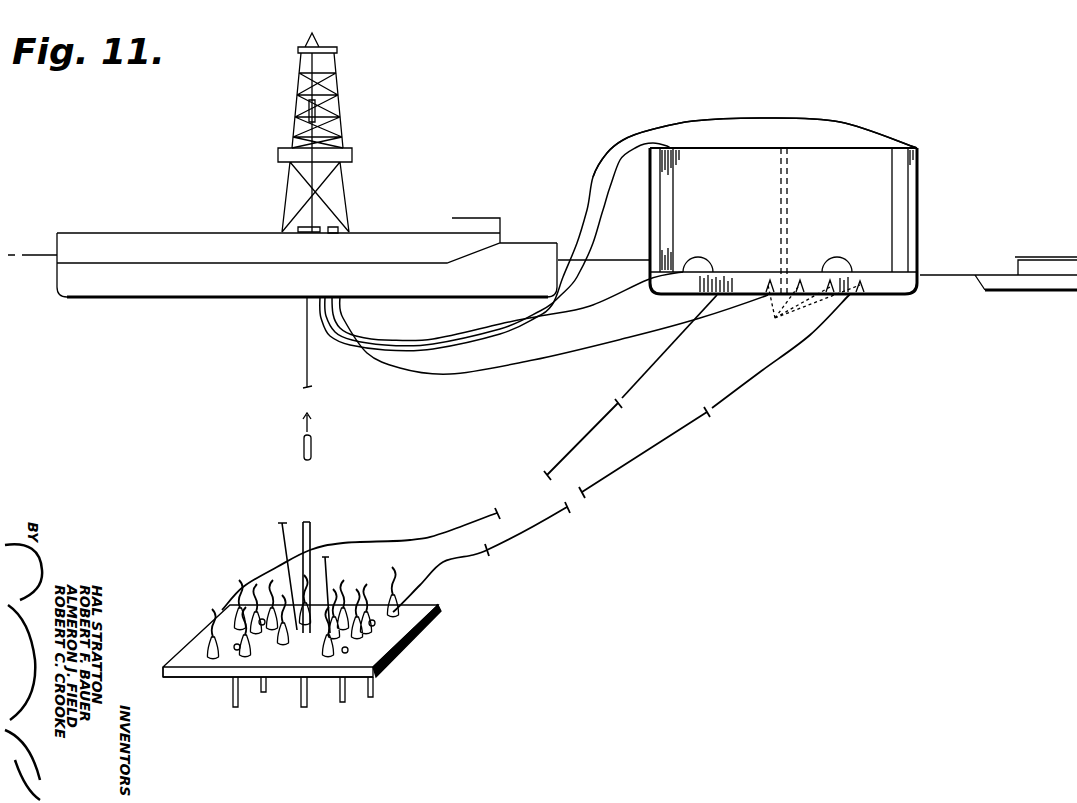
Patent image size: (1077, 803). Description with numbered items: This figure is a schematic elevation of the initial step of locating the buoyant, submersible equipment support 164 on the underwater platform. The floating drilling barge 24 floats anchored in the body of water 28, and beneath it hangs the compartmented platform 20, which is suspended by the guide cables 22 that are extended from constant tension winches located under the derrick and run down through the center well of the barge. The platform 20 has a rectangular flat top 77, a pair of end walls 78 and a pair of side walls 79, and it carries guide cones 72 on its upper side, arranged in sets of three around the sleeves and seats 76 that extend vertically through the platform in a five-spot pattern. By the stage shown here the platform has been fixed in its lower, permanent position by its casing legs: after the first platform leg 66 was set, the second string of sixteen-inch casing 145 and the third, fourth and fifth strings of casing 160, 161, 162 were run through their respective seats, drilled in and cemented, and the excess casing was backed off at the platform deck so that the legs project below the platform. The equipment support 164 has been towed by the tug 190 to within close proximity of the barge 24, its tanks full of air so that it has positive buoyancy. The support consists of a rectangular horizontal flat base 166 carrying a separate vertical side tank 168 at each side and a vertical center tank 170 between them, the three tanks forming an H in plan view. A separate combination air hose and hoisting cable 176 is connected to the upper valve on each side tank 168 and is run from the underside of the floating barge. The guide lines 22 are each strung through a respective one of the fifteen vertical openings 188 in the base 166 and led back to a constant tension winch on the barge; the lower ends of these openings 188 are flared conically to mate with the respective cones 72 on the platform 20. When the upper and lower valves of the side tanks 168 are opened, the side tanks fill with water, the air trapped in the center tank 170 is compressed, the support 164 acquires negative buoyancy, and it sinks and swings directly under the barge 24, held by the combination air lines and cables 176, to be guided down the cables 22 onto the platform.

The compartmented platform 20 is at (412, 647).
The guide cables 22 is at (452, 562).
The floating drilling barge 24 is at (178, 292).
The body of water 28 is at (222, 347).
The support leg 66 is at (304, 707).
The guide cones 72 is at (207, 647).
The seats 76 is at (237, 642).
The rectangular flat top 77 is at (177, 658).
The end walls 78 is at (447, 625).
The side walls 79 is at (190, 675).
The second string of 16" casing 145 is at (343, 702).
The third string of casing 160 is at (236, 708).
The fourth string of casing 161 is at (264, 692).
The fifth string of casing 162 is at (372, 697).
The floating storage tank 164 is at (817, 244).
The rectangular horizontal flat base 166 is at (888, 282).
The vertical side tank 168 is at (670, 180).
The vertical center tank 170 is at (745, 150).
The combination air hose and hoisting cable 176 is at (541, 348).
The vertical openings 188 is at (812, 310).
The tug 190 is at (993, 268).